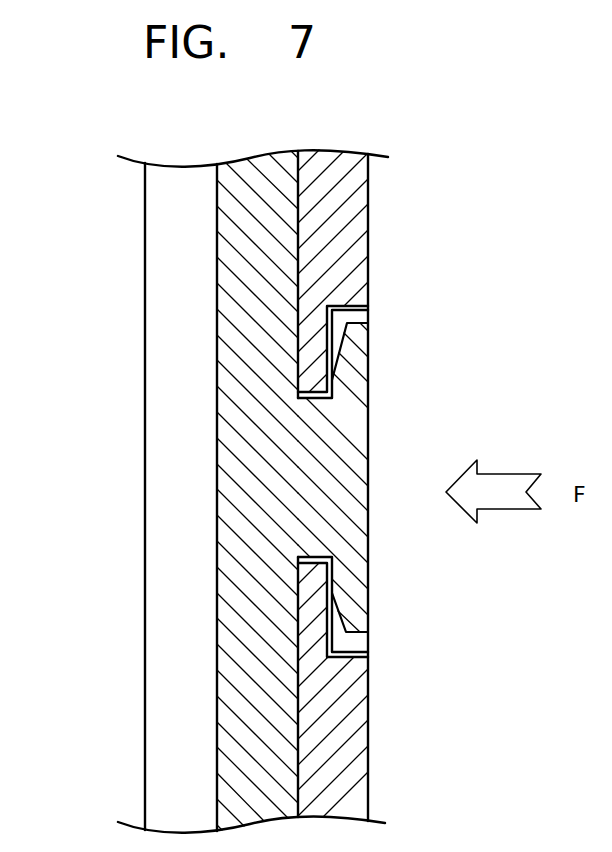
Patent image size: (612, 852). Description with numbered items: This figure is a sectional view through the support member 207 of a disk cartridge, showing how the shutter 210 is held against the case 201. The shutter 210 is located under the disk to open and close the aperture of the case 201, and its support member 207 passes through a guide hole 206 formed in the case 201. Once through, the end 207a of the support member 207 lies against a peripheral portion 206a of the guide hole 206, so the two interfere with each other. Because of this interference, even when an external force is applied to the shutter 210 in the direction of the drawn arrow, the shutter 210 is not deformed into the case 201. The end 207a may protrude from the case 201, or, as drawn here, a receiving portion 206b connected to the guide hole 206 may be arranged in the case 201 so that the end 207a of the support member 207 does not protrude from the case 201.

The case 201 is at (338, 752).
The guide hole 206 is at (418, 452).
The peripheral portion 206a is at (328, 640).
The receiving portion 206b is at (343, 305).
The support member 207 is at (401, 477).
The end 207a is at (370, 605).
The shutter 210 is at (237, 317).